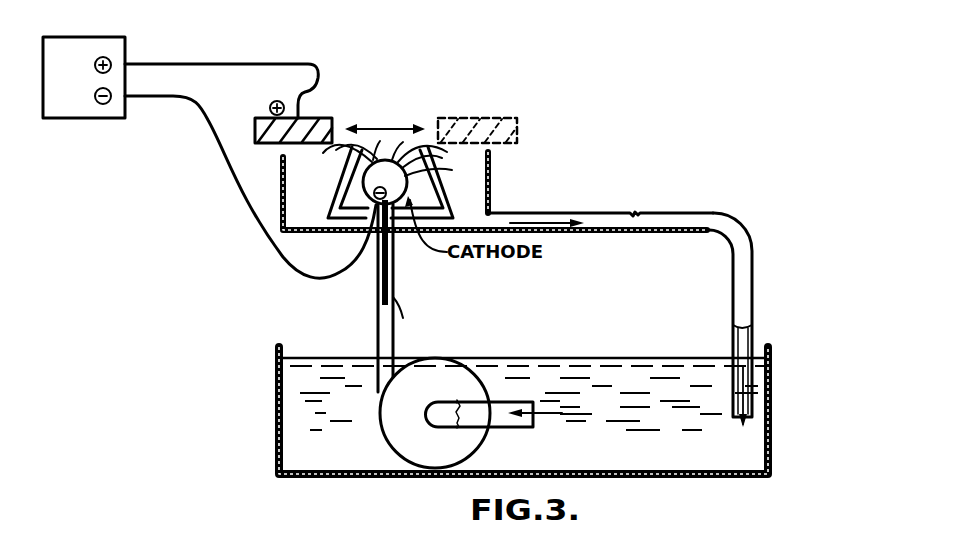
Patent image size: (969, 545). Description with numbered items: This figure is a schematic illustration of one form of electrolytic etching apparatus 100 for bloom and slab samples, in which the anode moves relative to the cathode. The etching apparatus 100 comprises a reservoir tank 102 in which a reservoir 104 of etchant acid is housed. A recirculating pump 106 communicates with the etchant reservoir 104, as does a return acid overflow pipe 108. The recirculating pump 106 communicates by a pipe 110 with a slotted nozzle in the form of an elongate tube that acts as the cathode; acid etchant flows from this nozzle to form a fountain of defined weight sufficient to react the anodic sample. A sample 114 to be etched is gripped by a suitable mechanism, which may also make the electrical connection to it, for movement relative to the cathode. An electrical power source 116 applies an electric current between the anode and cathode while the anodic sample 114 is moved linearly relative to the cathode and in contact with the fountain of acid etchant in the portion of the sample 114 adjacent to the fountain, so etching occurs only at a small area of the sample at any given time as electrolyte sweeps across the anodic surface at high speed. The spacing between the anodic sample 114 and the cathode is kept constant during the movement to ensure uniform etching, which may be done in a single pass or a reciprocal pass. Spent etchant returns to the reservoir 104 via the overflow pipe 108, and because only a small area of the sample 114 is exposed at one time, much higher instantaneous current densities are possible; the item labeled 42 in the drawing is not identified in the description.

The etching apparatus 100 is at (614, 158).
The reservoir tank 102 is at (277, 438).
The reservoir of etchant acid 104 is at (328, 447).
The recirculating pump 106 is at (430, 447).
The return acid overflow pipe 108 is at (749, 290).
The pipe 110 is at (395, 248).
The sample 114 is at (258, 136).
The electrical power source 116 is at (63, 107).
The ball 42 is at (404, 178).